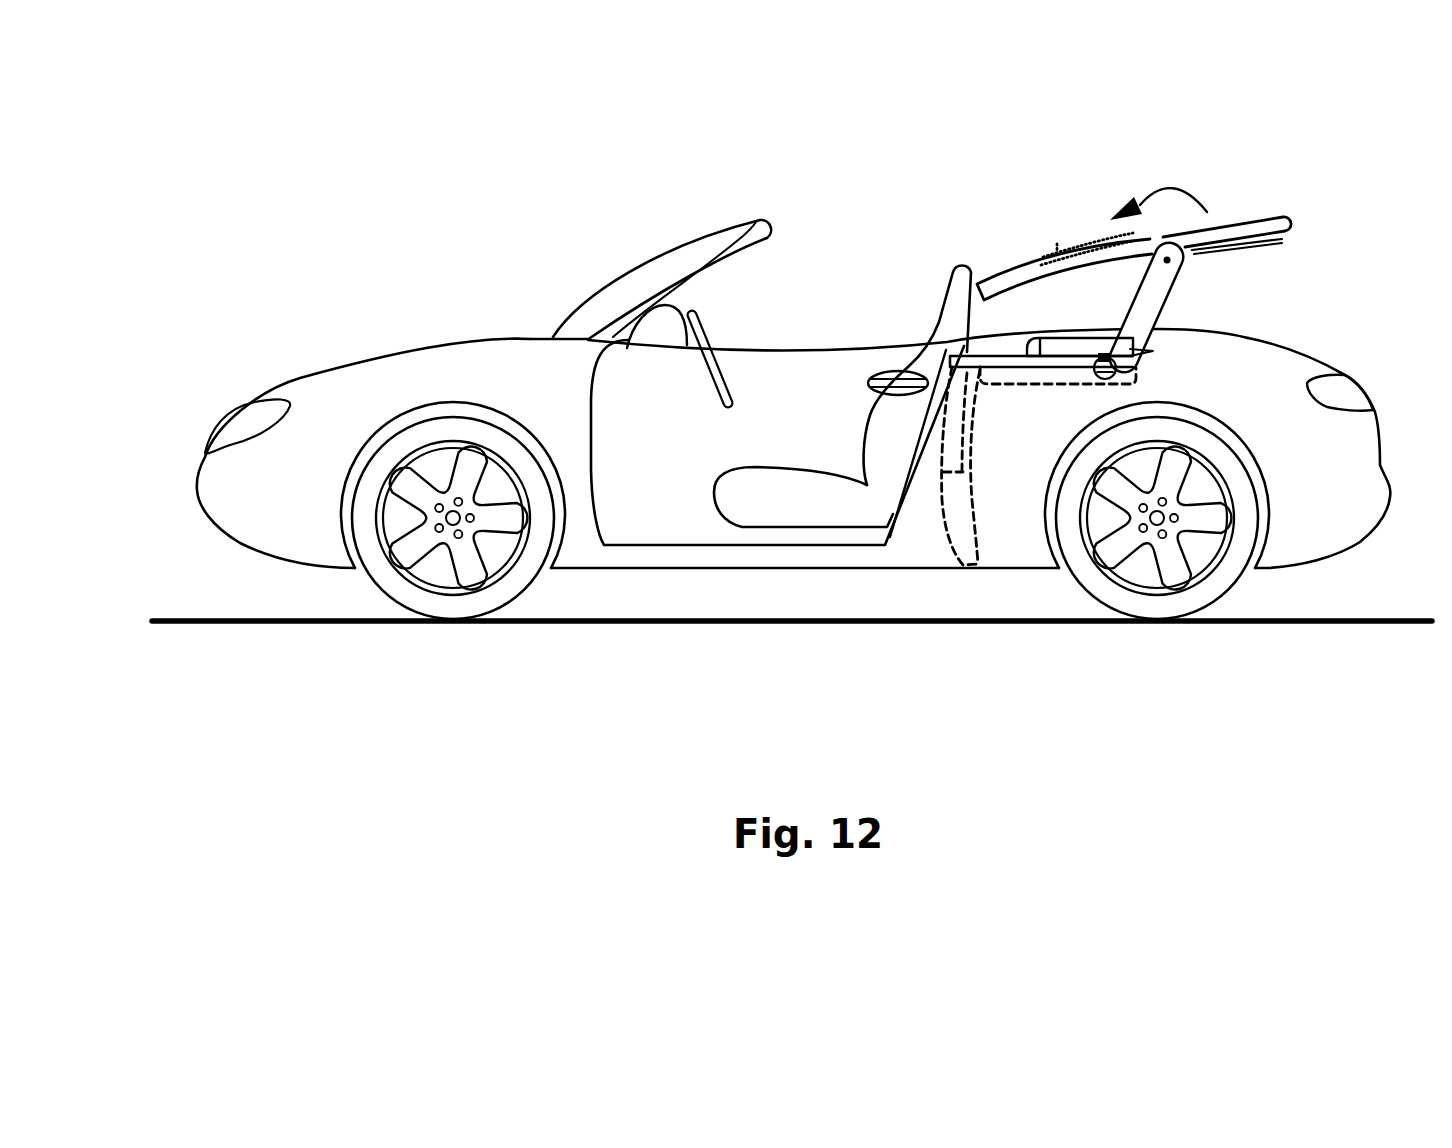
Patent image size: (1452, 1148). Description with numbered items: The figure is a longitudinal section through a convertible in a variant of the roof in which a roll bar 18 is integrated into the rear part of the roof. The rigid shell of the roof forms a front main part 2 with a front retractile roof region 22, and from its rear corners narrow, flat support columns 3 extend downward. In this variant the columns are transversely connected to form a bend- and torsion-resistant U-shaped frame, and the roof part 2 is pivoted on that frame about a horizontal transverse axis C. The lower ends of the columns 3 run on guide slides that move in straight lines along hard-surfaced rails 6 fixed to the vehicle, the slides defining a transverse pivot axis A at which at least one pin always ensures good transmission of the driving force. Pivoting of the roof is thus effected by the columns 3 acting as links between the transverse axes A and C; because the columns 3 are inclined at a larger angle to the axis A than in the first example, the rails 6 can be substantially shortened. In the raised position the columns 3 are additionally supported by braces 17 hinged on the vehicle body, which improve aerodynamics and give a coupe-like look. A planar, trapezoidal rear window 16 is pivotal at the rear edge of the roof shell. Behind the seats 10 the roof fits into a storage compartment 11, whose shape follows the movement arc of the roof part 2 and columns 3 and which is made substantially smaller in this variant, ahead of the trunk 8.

The front main part 2 is at (1015, 277).
The front retractile roof region 22 is at (1097, 233).
The transverse axis C is at (1168, 256).
The roll bar 18 is at (1267, 223).
The rear window 16 is at (1253, 245).
The support columns 3 is at (1158, 300).
The braces 17 is at (1086, 350).
The pivot axis of slide A is at (1110, 353).
The trunk 8 is at (1290, 443).
The rails 6 is at (977, 352).
The seats 10 is at (854, 392).
The storage compartment 11 is at (958, 513).